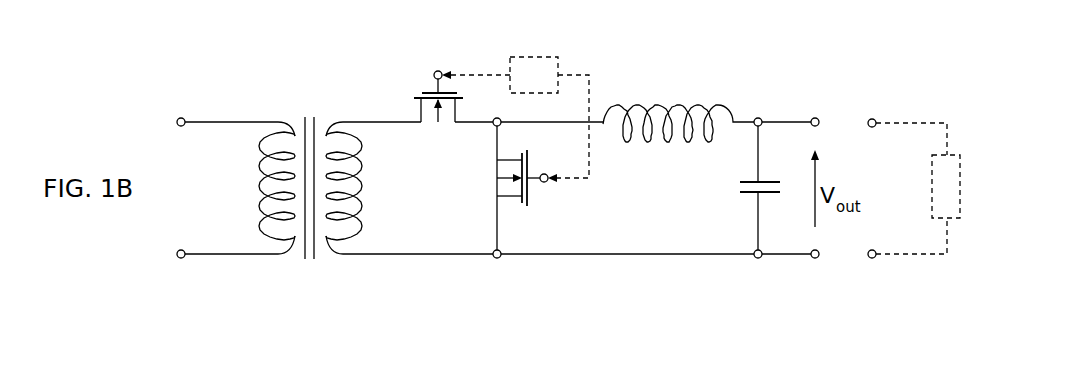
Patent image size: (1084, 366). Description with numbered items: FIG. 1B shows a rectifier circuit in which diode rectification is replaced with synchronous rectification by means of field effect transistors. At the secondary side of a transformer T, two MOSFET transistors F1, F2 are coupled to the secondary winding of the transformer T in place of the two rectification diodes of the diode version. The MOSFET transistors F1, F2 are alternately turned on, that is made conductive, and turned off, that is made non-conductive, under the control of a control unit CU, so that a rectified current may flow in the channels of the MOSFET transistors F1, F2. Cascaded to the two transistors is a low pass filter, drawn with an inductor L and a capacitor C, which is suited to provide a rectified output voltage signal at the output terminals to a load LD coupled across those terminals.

The transformer T is at (303, 286).
The MOSFET transistor F1 is at (398, 106).
The MOSFET transistor F2 is at (484, 172).
The control unit CU is at (540, 57).
The load L is at (677, 105).
The capacitor C is at (750, 196).
The load LD is at (932, 173).